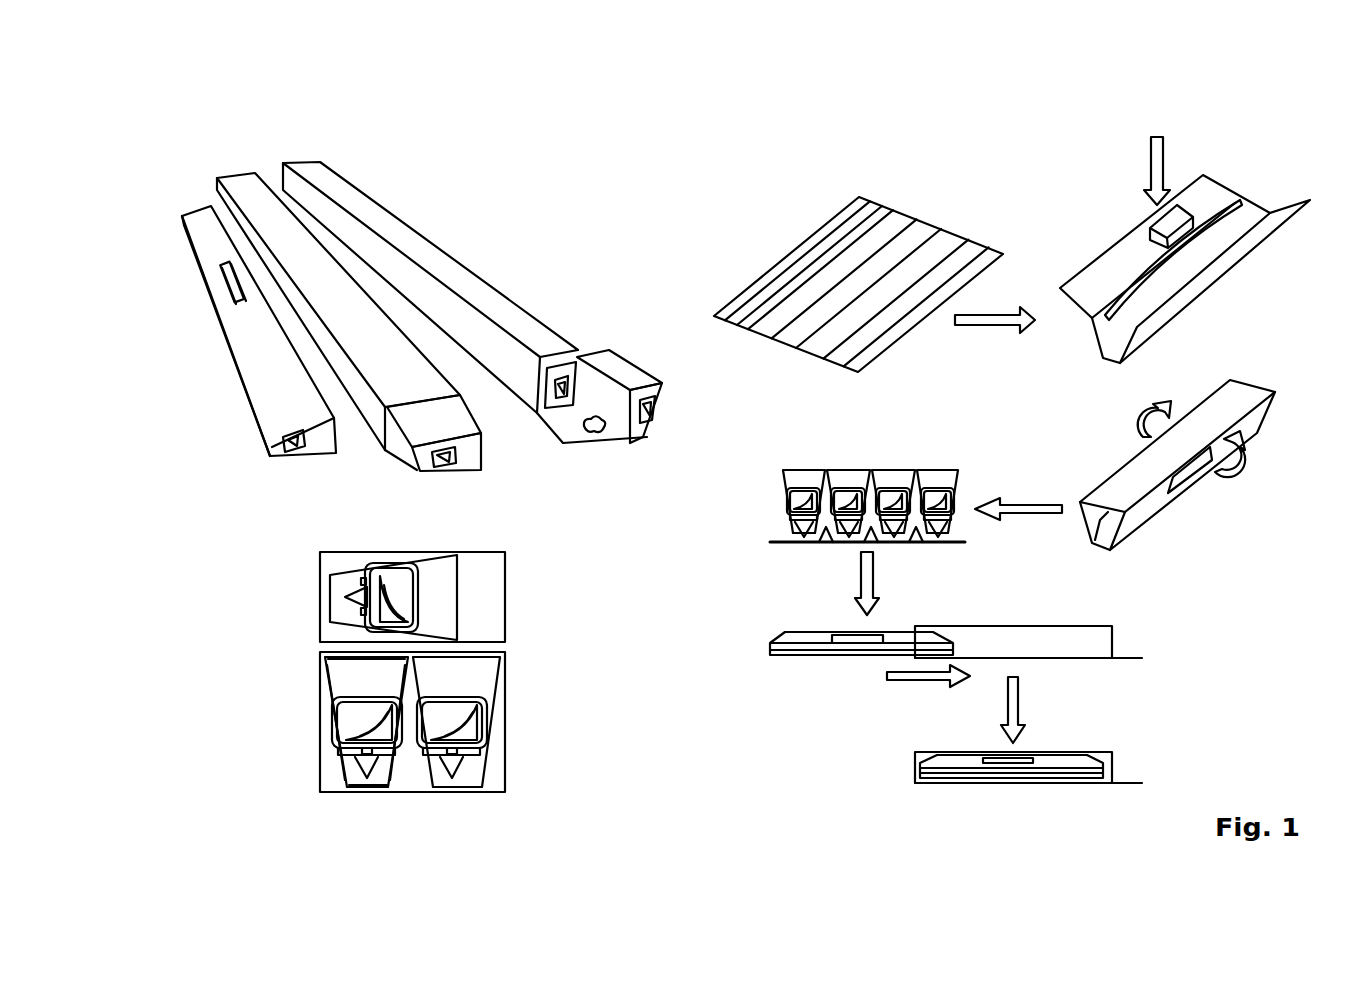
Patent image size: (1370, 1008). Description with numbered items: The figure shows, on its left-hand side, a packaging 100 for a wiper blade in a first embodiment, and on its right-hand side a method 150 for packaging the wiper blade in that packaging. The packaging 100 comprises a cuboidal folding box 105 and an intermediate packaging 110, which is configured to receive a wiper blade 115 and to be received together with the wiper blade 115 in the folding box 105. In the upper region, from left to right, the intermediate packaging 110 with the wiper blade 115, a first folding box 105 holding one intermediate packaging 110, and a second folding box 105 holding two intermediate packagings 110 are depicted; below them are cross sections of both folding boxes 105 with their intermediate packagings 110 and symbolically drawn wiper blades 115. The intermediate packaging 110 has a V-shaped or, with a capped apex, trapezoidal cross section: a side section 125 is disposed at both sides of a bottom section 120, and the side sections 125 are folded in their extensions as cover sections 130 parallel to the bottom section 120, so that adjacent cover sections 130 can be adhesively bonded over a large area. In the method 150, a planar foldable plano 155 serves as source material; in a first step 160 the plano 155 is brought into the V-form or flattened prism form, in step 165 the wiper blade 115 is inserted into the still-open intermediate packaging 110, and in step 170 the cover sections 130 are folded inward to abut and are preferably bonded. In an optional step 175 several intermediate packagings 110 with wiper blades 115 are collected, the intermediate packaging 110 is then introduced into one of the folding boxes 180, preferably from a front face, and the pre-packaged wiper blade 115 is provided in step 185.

The packaging 100 is at (232, 171).
The folding box 105 is at (367, 403).
The intermediate packaging 110 is at (482, 437).
The wiper blade 115 is at (453, 457).
The bottom section 120 is at (352, 778).
The side section 125 is at (405, 786).
The cover section 130 is at (348, 667).
The method 150 is at (865, 165).
The plano 155 is at (776, 256).
The first step 160 is at (987, 332).
The step 165 is at (1150, 163).
The step 170 is at (1104, 423).
The optional step 175 is at (1027, 520).
The folding boxes 180 is at (860, 575).
The step 185 is at (1020, 700).